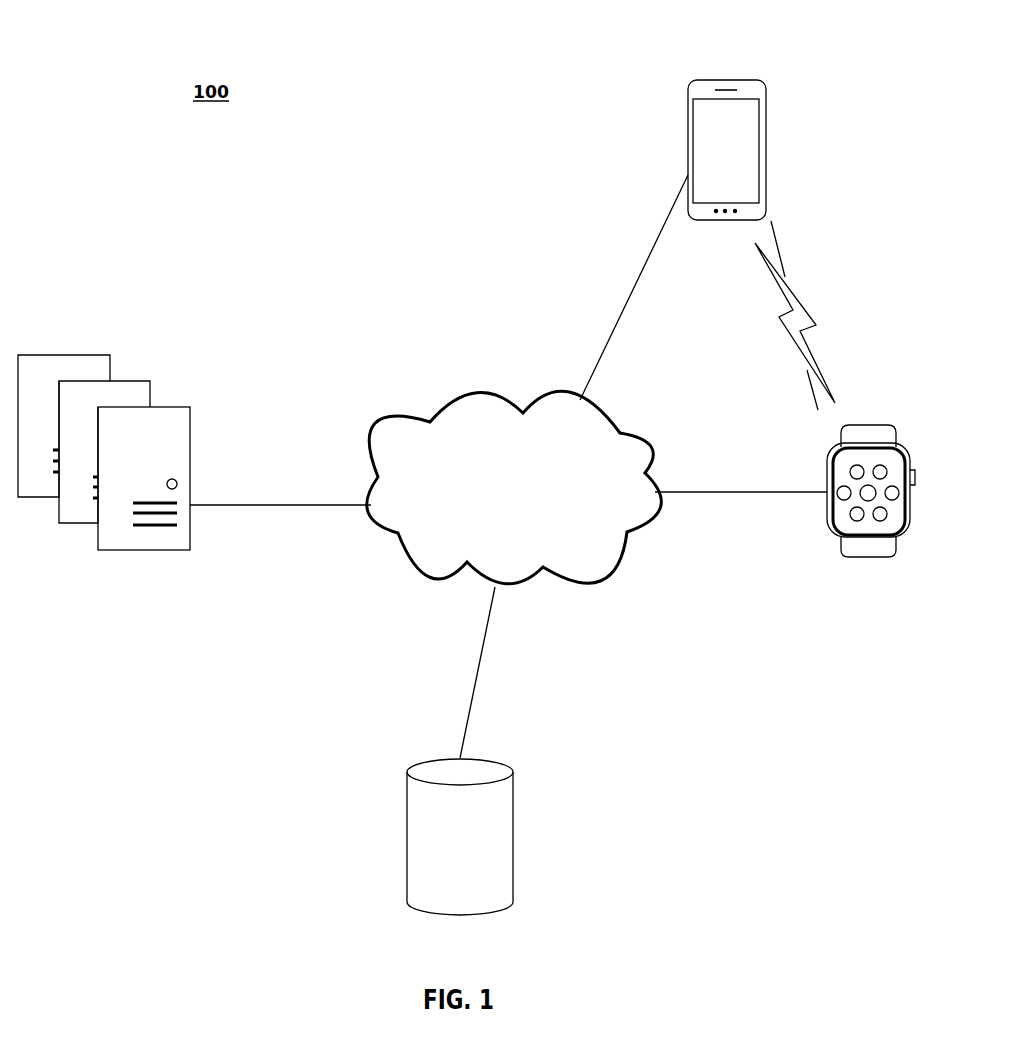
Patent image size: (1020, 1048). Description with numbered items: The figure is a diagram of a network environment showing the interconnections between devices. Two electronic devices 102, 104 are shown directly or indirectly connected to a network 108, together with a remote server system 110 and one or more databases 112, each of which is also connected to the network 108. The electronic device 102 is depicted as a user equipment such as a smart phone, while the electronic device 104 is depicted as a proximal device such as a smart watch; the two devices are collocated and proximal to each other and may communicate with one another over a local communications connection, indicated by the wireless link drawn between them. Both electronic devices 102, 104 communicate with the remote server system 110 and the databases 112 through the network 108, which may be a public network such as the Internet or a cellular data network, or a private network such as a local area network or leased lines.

The electronic device 102 is at (727, 78).
The electronic device 104 is at (889, 427).
The network 108 is at (645, 440).
The remote server system 110 is at (185, 407).
The database 112 is at (512, 770).